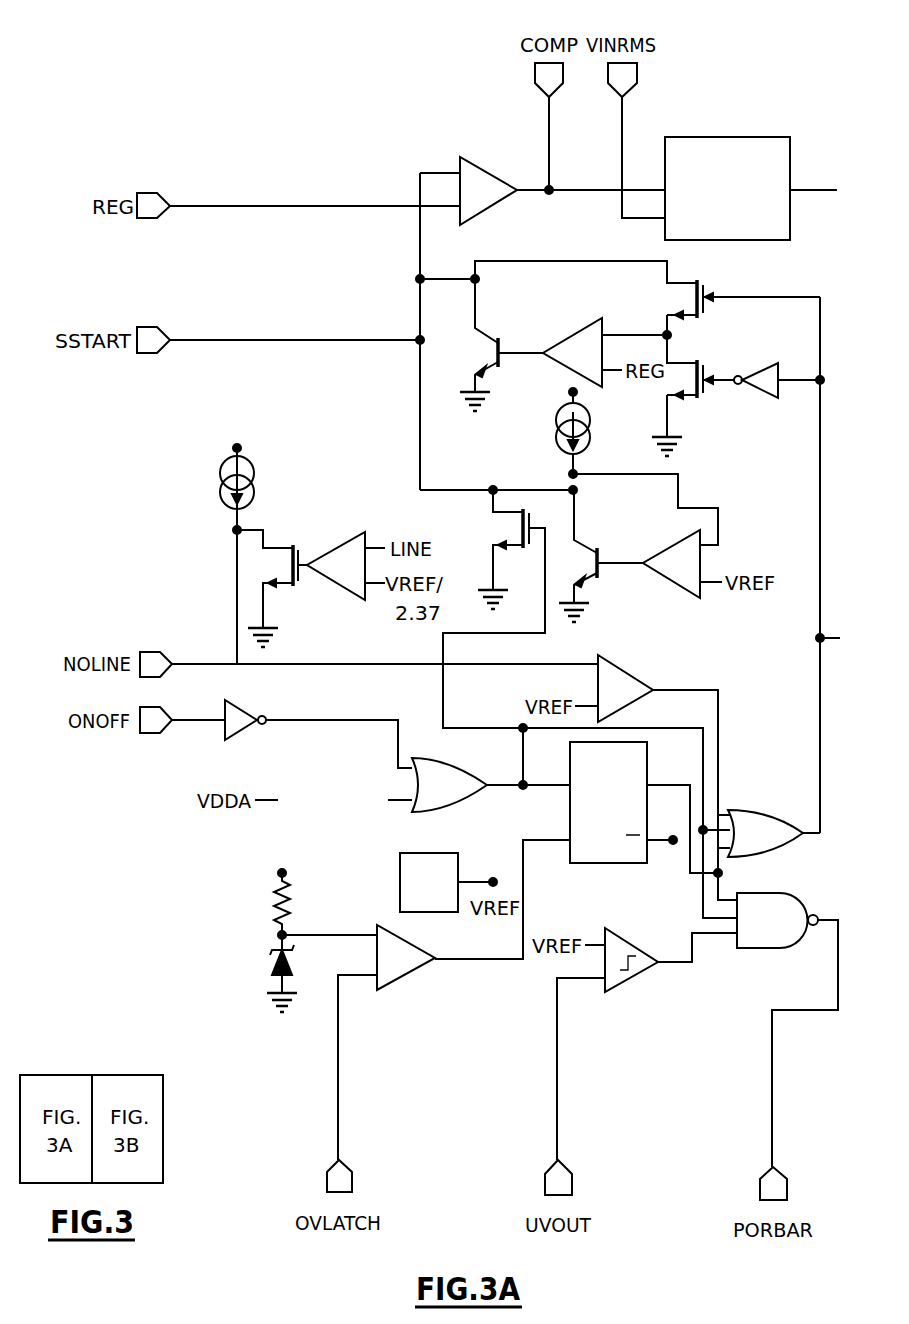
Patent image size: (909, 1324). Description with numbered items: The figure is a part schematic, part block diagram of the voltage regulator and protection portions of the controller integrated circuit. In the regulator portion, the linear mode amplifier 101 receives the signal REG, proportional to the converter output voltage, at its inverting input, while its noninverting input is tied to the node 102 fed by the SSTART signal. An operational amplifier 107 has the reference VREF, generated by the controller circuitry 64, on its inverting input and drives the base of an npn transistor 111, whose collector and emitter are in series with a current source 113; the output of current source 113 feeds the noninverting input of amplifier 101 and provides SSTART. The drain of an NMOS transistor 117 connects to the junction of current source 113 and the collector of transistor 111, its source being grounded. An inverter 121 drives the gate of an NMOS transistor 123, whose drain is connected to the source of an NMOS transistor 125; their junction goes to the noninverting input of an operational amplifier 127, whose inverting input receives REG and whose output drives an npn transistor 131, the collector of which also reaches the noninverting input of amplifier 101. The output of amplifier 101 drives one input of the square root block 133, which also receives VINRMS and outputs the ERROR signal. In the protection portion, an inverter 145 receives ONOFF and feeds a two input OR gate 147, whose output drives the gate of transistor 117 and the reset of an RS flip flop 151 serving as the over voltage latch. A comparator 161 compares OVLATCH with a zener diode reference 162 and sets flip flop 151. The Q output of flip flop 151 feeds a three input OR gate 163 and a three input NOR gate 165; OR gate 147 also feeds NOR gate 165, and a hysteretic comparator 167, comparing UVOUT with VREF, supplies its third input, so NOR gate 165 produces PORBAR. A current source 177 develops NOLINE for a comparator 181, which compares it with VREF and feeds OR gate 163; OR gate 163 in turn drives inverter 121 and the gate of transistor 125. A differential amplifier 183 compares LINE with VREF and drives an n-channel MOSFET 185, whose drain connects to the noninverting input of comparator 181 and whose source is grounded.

The linear mode amplifier 101 is at (485, 175).
The node 102 is at (420, 256).
The square root block 133 is at (750, 137).
The NMOS transistor 125 is at (680, 275).
The NMOS transistor 123 is at (680, 365).
The inverter 121 is at (748, 400).
The operational amplifier 127 is at (603, 328).
The npn transistor 131 is at (482, 350).
The current source 113 is at (590, 428).
The npn transistor 111 is at (600, 548).
The operational amplifier 107 is at (670, 583).
The NMOS transistor 117 is at (508, 528).
The current source 177 is at (280, 458).
The n-channel MOSFET 185 is at (275, 548).
The differential amplifier 183 is at (375, 543).
The comparator 181 is at (628, 668).
The inverter 145 is at (245, 702).
The OR gate 147 is at (425, 812).
The RS flip flop 151 is at (603, 867).
The OR gate 163 is at (745, 858).
The NOR gate 165 is at (757, 953).
The hysteretic comparator 167 is at (630, 935).
The comparator 161 is at (400, 935).
The zener diode reference 162 is at (262, 933).
The controller circuitry 64 is at (400, 893).